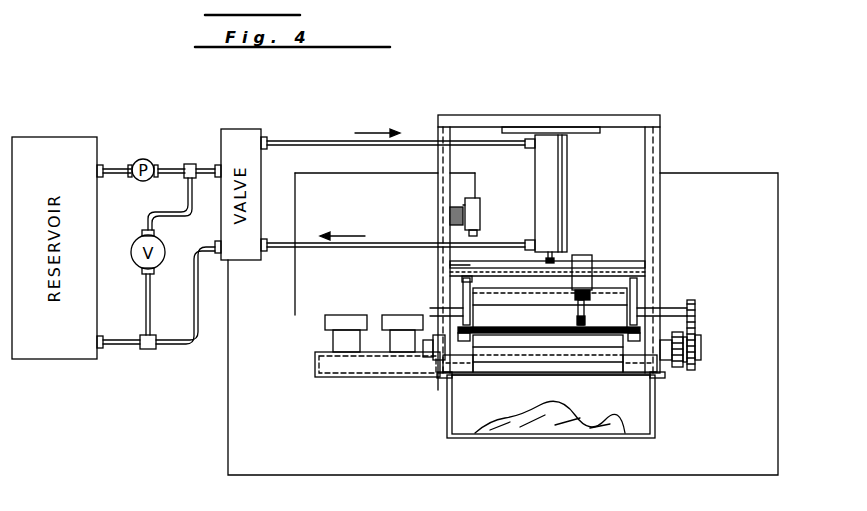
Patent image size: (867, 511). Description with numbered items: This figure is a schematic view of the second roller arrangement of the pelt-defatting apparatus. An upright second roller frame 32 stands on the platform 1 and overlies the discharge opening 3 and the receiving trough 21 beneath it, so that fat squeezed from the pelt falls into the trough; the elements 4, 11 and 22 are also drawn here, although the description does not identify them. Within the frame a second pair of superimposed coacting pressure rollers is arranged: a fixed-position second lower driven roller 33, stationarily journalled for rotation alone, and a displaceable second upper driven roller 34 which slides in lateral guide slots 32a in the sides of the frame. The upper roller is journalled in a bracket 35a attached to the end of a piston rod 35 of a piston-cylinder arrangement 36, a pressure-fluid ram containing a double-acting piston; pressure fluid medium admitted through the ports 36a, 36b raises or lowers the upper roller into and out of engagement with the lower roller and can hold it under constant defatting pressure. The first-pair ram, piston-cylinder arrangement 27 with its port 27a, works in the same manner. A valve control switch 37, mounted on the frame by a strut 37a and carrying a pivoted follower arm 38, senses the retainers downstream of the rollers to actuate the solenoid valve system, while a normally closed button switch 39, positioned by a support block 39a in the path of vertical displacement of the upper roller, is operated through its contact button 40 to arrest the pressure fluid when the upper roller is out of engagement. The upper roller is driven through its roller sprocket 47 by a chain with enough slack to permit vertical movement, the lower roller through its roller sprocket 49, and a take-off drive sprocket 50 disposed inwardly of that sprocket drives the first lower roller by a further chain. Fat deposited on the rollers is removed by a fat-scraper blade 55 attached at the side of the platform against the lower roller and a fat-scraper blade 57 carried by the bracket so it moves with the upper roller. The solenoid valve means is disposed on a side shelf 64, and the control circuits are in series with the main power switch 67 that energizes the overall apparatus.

The platform 1 is at (435, 360).
The discharge opening 3 is at (465, 377).
The shaft 4 is at (455, 335).
The bed plate 11 is at (455, 300).
The receiving trough 21 is at (452, 425).
The chips 22 is at (655, 420).
The piston-cylinder arrangement 27 is at (612, 503).
The port 27a is at (512, 510).
The second roller frame 32 is at (638, 118).
The lateral guide slots 32a is at (440, 255).
The second lower driven roller 33 is at (655, 388).
The second upper driven roller 34 is at (615, 320).
The piston rod 35 is at (552, 270).
The bracket 35a is at (470, 282).
The piston-cylinder arrangement 36 is at (550, 148).
The port 36a is at (528, 140).
The port 36b is at (532, 243).
The valve control switch 37 is at (583, 264).
The strut 37a is at (470, 265).
The follower arm 38 is at (590, 312).
The button switch 39 is at (455, 210).
The support block 39a is at (470, 205).
The contact button 40 is at (482, 220).
The roller sprocket 47 is at (695, 308).
The roller sprocket 49 is at (700, 350).
The take-off drive sprocket 50 is at (695, 368).
The fat-scraper blade 55 is at (455, 365).
The fat-scraper blade 57 is at (592, 278).
The side shelf 64 is at (340, 362).
The main power switch 67 is at (425, 348).